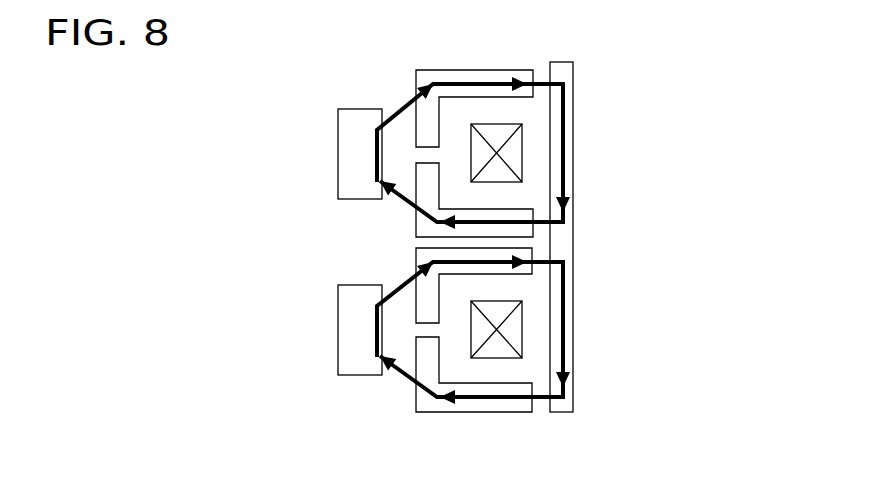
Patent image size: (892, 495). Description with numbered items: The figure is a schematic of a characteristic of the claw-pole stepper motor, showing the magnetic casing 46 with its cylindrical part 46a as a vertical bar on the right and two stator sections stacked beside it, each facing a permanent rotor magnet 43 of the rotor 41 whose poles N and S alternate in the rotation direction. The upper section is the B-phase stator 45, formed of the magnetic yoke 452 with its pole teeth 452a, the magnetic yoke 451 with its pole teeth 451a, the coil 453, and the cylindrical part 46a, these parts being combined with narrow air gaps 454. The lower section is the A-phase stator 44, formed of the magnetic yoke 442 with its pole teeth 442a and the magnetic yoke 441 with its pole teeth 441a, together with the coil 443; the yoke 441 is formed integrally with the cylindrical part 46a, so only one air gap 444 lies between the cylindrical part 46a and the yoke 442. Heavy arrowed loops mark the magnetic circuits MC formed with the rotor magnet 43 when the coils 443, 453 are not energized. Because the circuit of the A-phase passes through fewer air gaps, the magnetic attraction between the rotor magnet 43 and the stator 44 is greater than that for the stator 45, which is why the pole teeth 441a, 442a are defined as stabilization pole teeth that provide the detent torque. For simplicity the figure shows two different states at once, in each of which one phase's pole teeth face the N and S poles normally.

The rotor 41 is at (340, 186).
The rotor magnets 43 is at (345, 325).
The stator 44 is at (587, 415).
The stator 45 is at (548, 59).
The magnetic casing 46 is at (562, 412).
The cylindrical part 46a is at (560, 237).
The magnetic yoke 441 is at (427, 407).
The pole teeth 441a is at (427, 353).
The magnetic yoke 442 is at (416, 252).
The pole teeth 442a is at (428, 312).
The coil 443 is at (522, 337).
The air gaps 444 is at (543, 270).
The magnetic yoke 451 is at (420, 230).
The pole teeth 451a is at (427, 178).
The magnetic yoke 452 is at (427, 78).
The pole teeth 452a is at (428, 128).
The coil 453 is at (522, 155).
The air gaps 454 is at (542, 94).
The magnetic circuits MC is at (468, 83).